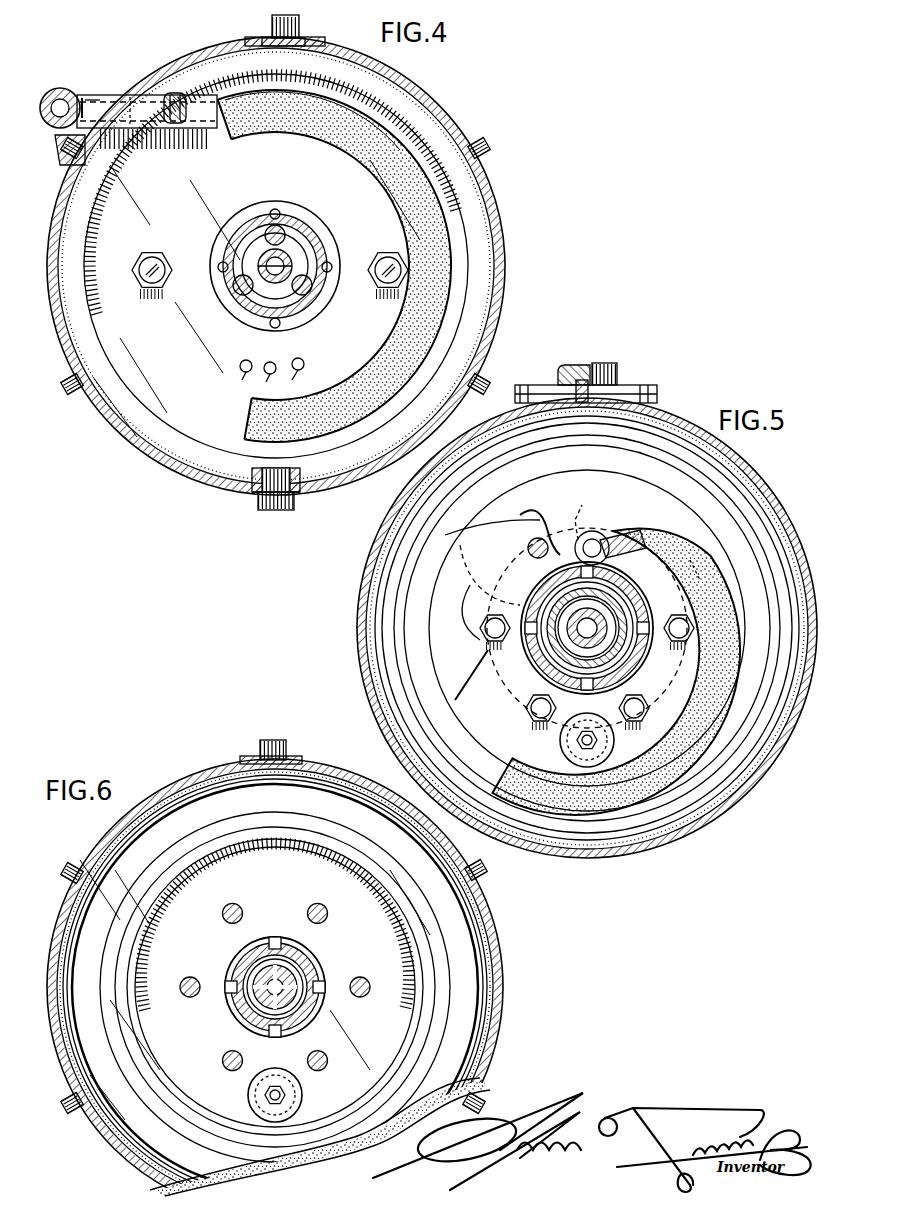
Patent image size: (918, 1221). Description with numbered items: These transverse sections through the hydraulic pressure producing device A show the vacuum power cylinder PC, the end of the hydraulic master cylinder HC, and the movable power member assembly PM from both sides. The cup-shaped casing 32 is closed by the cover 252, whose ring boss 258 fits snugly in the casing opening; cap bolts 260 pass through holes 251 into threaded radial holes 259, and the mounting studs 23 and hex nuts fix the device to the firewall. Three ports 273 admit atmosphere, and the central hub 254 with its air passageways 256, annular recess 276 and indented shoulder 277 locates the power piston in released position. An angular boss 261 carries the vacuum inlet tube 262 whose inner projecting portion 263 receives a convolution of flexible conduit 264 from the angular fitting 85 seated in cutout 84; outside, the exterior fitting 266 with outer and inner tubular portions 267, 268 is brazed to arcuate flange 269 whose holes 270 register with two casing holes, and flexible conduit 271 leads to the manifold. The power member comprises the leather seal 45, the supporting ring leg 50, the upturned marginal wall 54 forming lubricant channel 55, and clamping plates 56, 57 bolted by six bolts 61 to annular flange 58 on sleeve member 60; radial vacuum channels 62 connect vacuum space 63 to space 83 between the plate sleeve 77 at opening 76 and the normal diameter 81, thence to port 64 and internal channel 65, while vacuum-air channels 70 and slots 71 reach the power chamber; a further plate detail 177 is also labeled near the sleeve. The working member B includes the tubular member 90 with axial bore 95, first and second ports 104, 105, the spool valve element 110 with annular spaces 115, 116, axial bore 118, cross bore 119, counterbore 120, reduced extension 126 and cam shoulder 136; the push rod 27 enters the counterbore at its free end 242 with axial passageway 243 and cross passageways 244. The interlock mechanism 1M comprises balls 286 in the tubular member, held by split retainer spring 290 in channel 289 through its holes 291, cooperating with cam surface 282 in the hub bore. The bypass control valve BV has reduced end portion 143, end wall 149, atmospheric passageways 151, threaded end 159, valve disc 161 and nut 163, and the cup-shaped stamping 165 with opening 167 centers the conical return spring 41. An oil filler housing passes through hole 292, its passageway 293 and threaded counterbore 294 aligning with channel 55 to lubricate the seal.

In FIG. 4, the studs 23 is at (145, 255).
In FIG. 4, the push rod 27 is at (292, 266).
In FIG. 4, the casing 32 is at (492, 212).
In FIG. 5, the casing 32 is at (765, 478).
In FIG. 6, the casing 32 is at (500, 966).
In FIG. 6, the return spring 41 is at (250, 830).
In FIG. 5, the sealing member 45 is at (672, 415).
In FIG. 6, the sealing member 45 is at (490, 998).
In FIG. 6, the leg 50 is at (170, 1180).
In FIG. 5, the marginal wall 54 is at (742, 462).
In FIG. 5, the annular channel 55 is at (778, 498).
In FIG. 5, the clamping plate 56 is at (480, 528).
In FIG. 6, the clamping plate 56 is at (190, 790).
In FIG. 5, the clamping plate 57 is at (400, 630).
In FIG. 5, the annular flange 58 is at (472, 580).
In FIG. 6, the sleeve member 60 is at (312, 966).
In FIG. 5, the bolts 61 is at (540, 537).
In FIG. 6, the bolts 61 is at (225, 910).
In FIG. 5, the radial vacuum channels 62 is at (542, 520).
In FIG. 5, the annular vacuum space 63 is at (478, 552).
In FIG. 5, the port 64 is at (540, 565).
In FIG. 5, the internal annular channel 65 is at (545, 645).
In FIG. 6, the vacuum-air channels 70 is at (280, 944).
In FIG. 6, the slots 71 is at (272, 936).
In FIG. 5, the central circular opening 76 is at (636, 660).
In FIG. 5, the sleeve 77 is at (625, 675).
In FIG. 5, the normal diameter 81 is at (640, 605).
In FIG. 5, the annular vacuum space 83 is at (471, 675).
In FIG. 5, the cutout 84 is at (600, 530).
In FIG. 5, the vacuum inlet fitting 85 is at (592, 500).
In FIG. 4, the tubular member 90 is at (255, 312).
In FIG. 5, the tubular member 90 is at (672, 550).
In FIG. 6, the tubular member 90 is at (322, 975).
In FIG. 4, the axial bore 95 is at (222, 270).
In FIG. 5, the axial bore 95 is at (650, 535).
In FIG. 6, the first port 104 is at (300, 950).
In FIG. 5, the second port 105 is at (585, 682).
In FIG. 4, the valve element 110 is at (250, 262).
In FIG. 5, the valve element 110 is at (560, 620).
In FIG. 5, the annular space 115 is at (530, 668).
In FIG. 4, the annular space 116 is at (240, 225).
In FIG. 6, the axial bore 118 is at (262, 1000).
In FIG. 6, the cross bore 119 is at (265, 988).
In FIG. 5, the counterbore 120 is at (707, 560).
In FIG. 5, the reduced extension 126 is at (650, 665).
In FIG. 6, the reduced extension 126 is at (258, 968).
In FIG. 4, the cam shoulder 136 is at (290, 322).
In FIG. 6, the reduced diameter end portion 143 is at (290, 1108).
In FIG. 6, the end wall 149 is at (300, 1088).
In FIG. 5, the atmospheric passageways 151 is at (580, 762).
In FIG. 6, the atmospheric passageways 151 is at (292, 1095).
In FIG. 5, the threaded end portion 159 is at (568, 745).
In FIG. 5, the valve disc 161 is at (606, 755).
In FIG. 5, the nut 163 is at (612, 742).
In FIG. 6, the cup-shaped stamping 165 is at (395, 870).
In FIG. 6, the radially disposed opening 167 is at (255, 1100).
In FIG. 5, the plate 177 is at (660, 392).
In FIG. 5, the free end 242 is at (560, 615).
In FIG. 5, the axial passageway 243 is at (566, 628).
In FIG. 5, the cross passageways 244 is at (690, 572).
In FIG. 4, the holes 251 is at (258, 496).
In FIG. 4, the cover 252 is at (160, 333).
In FIG. 4, the hub 254 is at (225, 243).
In FIG. 4, the air passageways 256 is at (262, 203).
In FIG. 4, the ring boss 258 is at (445, 130).
In FIG. 6, the ring boss 258 is at (320, 1137).
In FIG. 4, the threaded radial holes 259 is at (262, 470).
In FIG. 4, the cap bolts 260 is at (270, 25).
In FIG. 6, the cap bolts 260 is at (75, 862).
In FIG. 4, the angular boss 261 is at (188, 140).
In FIG. 4, the vacuum inlet tube 262 is at (183, 92).
In FIG. 4, the inner projecting portion 263 is at (262, 120).
In FIG. 4, the flexible conduit 264 is at (350, 130).
In FIG. 5, the flexible conduit 264 is at (670, 540).
In FIG. 4, the exterior vacuum inlet fitting 266 is at (100, 95).
In FIG. 4, the outer tubular portion 267 is at (80, 96).
In FIG. 4, the inner tubular portion 268 is at (165, 95).
In FIG. 4, the arcuate flange 269 is at (282, 44).
In FIG. 4, the holes 270 is at (300, 30).
In FIG. 4, the flexible conduit 271 is at (52, 90).
In FIG. 4, the ports 273 is at (266, 377).
In FIG. 4, the annular recess 276 is at (292, 255).
In FIG. 4, the indented shoulder 277 is at (320, 300).
In FIG. 4, the cam surface 282 is at (268, 326).
In FIG. 4, the balls 286 is at (238, 288).
In FIG. 4, the annular channel 289 is at (300, 238).
In FIG. 4, the ball retainer spring 290 is at (312, 285).
In FIG. 5, the ball retainer spring 290 is at (605, 363).
In FIG. 6, the ball retainer spring 290 is at (275, 738).
In FIG. 5, the holes 291 is at (560, 372).
In FIG. 6, the holes 291 is at (300, 756).
In FIG. 5, the hole 292 is at (600, 403).
In FIG. 5, the passageway 293 is at (575, 403).
In FIG. 5, the threaded counterbore 294 is at (575, 390).
In FIG. 4, the motor 1M is at (327, 210).
In FIG. 4, the hydraulic pressure producing device A is at (110, 467).
In FIG. 5, the hydraulic pressure producing device A is at (728, 825).
In FIG. 6, the hydraulic pressure producing device A is at (104, 1167).
In FIG. 4, the working member B is at (290, 204).
In FIG. 5, the working member B is at (636, 622).
In FIG. 6, the working member B is at (300, 1000).
In FIG. 5, the bypass control valve BV is at (552, 746).
In FIG. 6, the bypass control valve BV is at (236, 1086).
In FIG. 5, the hydraulic master cylinder HC is at (646, 373).
In FIG. 4, the power cylinder PC is at (517, 182).
In FIG. 5, the power cylinder PC is at (364, 564).
In FIG. 6, the power cylinder PC is at (528, 916).
In FIG. 5, the power member assembly PM is at (417, 654).
In FIG. 6, the power member assembly PM is at (470, 1057).